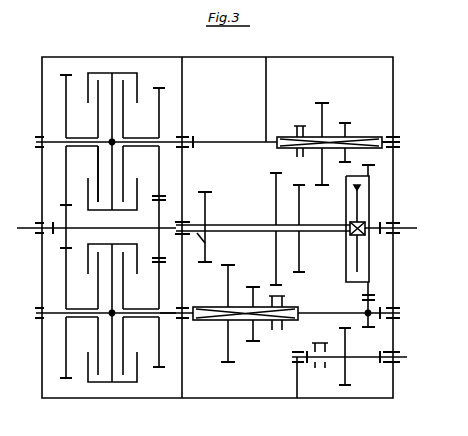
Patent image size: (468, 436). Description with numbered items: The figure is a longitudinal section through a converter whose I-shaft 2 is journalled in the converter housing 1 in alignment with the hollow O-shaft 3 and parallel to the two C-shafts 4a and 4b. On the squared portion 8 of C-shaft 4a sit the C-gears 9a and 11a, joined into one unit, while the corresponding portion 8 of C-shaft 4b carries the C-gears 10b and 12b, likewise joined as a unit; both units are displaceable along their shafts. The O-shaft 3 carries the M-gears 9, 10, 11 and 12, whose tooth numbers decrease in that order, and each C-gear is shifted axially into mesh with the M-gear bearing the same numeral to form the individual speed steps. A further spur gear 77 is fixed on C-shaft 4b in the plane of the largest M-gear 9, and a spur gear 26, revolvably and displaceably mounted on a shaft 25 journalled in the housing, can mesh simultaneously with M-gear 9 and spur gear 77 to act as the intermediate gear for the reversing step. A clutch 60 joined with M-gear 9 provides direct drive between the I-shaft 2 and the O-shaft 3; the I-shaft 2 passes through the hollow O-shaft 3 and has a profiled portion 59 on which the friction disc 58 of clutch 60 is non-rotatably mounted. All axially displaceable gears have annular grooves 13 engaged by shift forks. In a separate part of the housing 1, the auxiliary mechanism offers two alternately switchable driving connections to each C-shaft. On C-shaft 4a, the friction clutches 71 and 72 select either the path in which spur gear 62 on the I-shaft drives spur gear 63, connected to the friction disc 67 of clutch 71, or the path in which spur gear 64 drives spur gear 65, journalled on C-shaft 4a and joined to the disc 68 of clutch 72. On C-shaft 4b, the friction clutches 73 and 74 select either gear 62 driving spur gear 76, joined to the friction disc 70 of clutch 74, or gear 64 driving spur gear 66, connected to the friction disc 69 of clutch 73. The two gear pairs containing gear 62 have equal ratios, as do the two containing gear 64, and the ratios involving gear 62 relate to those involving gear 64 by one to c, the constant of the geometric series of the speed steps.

The converter housing 1 is at (394, 97).
The I-shaft 2 is at (27, 225).
The O-shaft 3 is at (419, 228).
The C-shaft 4a is at (266, 57).
The C-shaft 4b is at (167, 316).
The squared portion 8 is at (366, 143).
The M-gear 9 is at (372, 165).
The C-gear 9a is at (345, 123).
The M-gear 10 is at (277, 278).
The C-gear 10b is at (253, 342).
The M-gear 11 is at (299, 247).
The C-gear 11a is at (322, 103).
The M-gear 12 is at (205, 192).
The C-gear 12b is at (228, 363).
The annular groove 13 is at (300, 127).
The shaft 25 is at (362, 358).
The spur gear 26 is at (345, 386).
The friction disc 58 is at (357, 203).
The profiled portion 59 is at (367, 235).
The clutch 60 is at (362, 185).
The spur gear 62 is at (62, 242).
The spur gear 63 is at (67, 73).
The spur gear 64 is at (159, 210).
The spur gear 65 is at (159, 87).
The spur gear 66 is at (157, 368).
The friction disc 67 is at (98, 167).
The disc 68 is at (123, 118).
The friction disc 69 is at (123, 335).
The friction disc 70 is at (98, 283).
The friction clutch 71 is at (91, 73).
The friction clutch 72 is at (120, 73).
The friction clutch 73 is at (125, 381).
The friction clutch 74 is at (92, 381).
The spur gear 76 is at (65, 379).
The spur gear 77 is at (372, 325).